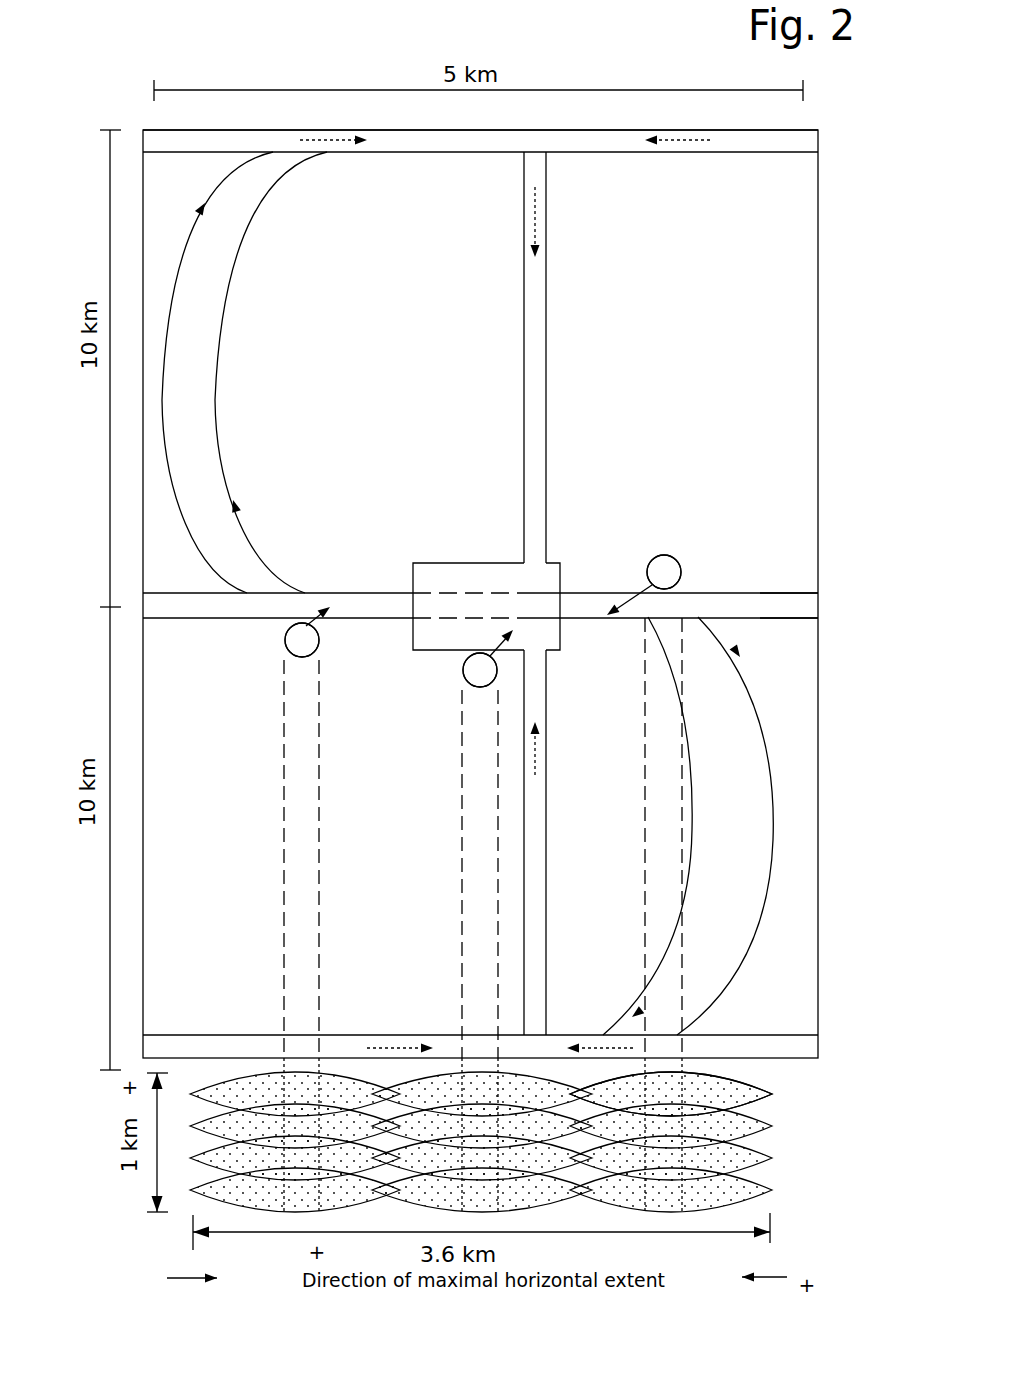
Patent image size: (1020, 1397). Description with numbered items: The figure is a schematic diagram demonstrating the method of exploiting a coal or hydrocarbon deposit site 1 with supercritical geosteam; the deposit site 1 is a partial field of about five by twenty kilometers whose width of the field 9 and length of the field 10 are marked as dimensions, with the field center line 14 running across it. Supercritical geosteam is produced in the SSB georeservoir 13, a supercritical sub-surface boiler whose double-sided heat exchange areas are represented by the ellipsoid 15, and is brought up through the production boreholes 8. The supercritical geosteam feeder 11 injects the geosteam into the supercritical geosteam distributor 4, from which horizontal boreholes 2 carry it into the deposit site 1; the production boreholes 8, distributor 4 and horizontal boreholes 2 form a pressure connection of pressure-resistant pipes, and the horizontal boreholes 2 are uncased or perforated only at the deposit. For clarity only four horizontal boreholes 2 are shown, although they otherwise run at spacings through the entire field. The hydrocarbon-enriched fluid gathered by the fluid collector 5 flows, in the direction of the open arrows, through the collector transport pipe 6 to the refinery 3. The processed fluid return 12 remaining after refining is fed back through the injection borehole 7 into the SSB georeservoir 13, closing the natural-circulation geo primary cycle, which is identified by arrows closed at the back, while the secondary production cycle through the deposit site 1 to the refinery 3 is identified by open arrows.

The coal or hydrocarbon deposit site 1 is at (765, 257).
The horizontal borehole 2 is at (162, 390).
The refinery 3 is at (420, 570).
The supercritical geosteam distributor 4 is at (233, 608).
The fluid collector 5 is at (488, 142).
The collector transport pipe 6 is at (535, 363).
The injection borehole 7 is at (463, 672).
The production boreholes 8 is at (320, 638).
The width of the field 9 is at (582, 123).
The length of the field 10 is at (107, 643).
The supercritical geosteam feeder 11 is at (483, 606).
The processed fluid return 12 is at (489, 657).
The SSB georeservoir 13 is at (768, 1157).
The field center line 14 is at (815, 615).
The ellipsoid 15 is at (727, 1090).